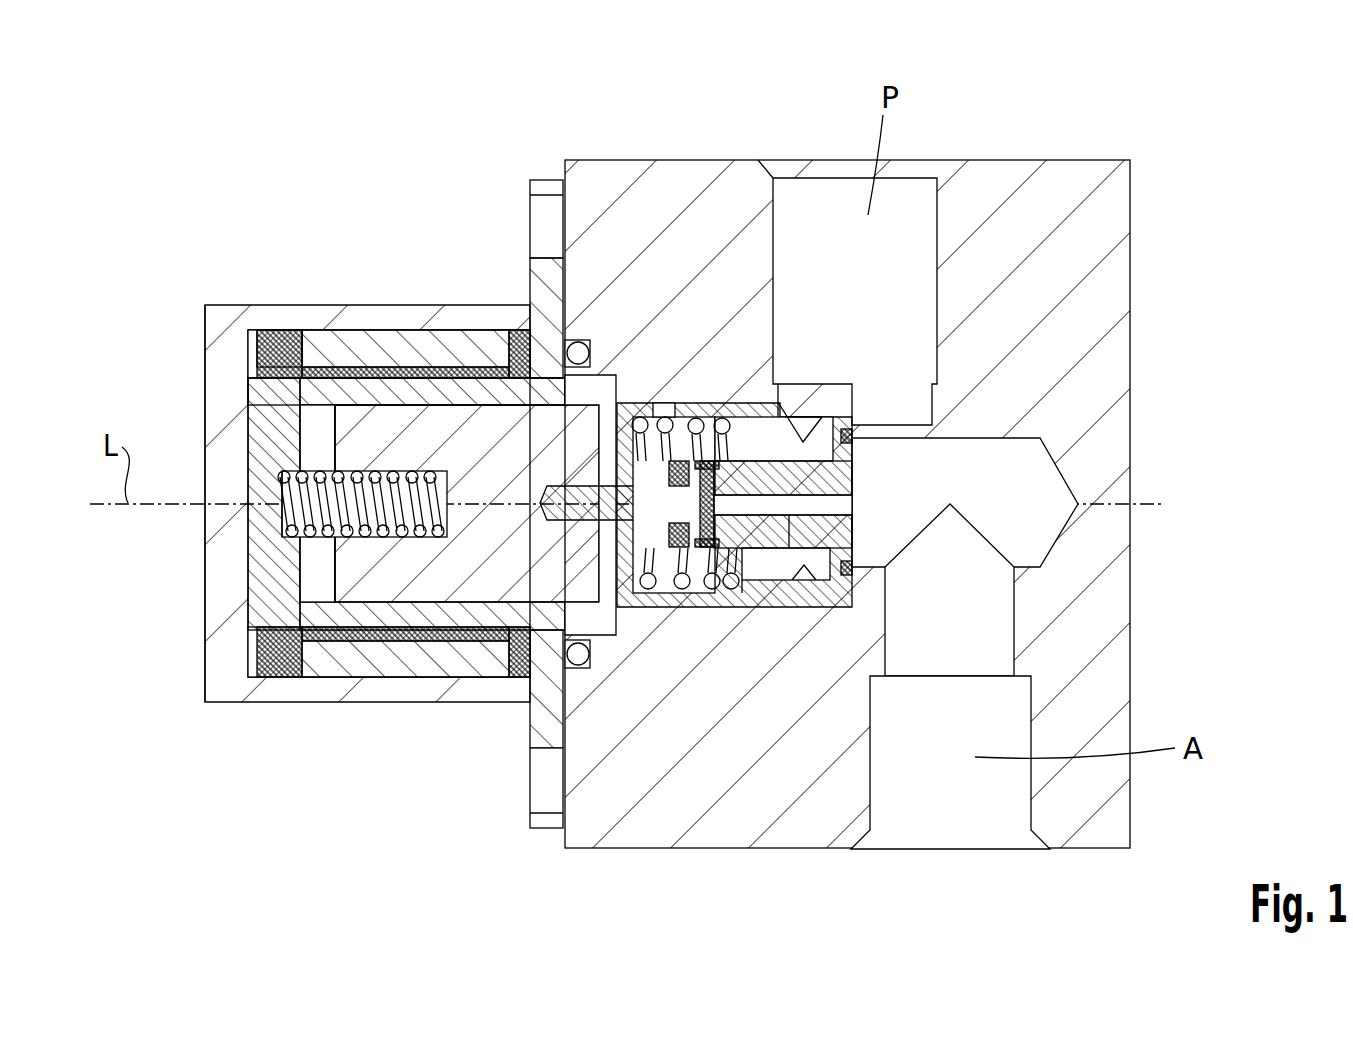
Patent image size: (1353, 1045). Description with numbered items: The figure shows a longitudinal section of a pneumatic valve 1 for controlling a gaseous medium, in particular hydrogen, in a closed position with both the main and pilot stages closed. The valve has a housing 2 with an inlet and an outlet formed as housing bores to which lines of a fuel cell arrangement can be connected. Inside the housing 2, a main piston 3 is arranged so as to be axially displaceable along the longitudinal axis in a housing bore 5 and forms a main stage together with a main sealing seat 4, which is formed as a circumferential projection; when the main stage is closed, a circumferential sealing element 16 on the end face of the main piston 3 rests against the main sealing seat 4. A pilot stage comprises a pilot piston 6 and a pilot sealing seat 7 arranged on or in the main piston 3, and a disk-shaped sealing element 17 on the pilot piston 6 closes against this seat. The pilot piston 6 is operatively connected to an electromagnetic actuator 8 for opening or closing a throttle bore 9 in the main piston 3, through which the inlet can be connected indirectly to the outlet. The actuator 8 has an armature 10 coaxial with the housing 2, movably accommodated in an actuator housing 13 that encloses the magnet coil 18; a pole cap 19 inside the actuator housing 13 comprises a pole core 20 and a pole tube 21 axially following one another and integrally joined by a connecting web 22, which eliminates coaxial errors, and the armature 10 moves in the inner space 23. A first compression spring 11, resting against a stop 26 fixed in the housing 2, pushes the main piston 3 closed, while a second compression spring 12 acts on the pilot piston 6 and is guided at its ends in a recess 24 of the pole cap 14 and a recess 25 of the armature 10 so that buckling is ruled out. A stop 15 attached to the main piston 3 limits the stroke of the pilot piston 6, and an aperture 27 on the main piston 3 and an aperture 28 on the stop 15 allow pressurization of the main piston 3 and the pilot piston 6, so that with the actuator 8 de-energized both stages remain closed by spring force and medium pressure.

The pneumatic valve 1 is at (1120, 126).
The housing 2 is at (1095, 305).
The main piston 3 is at (752, 607).
The main sealing seat 4 is at (858, 585).
The housing bore 5 is at (698, 547).
The pilot piston 6 is at (584, 512).
The pilot sealing seat 7 is at (738, 553).
The actuator 8 is at (389, 299).
The throttle bore 9 is at (790, 530).
The armature 10 is at (415, 567).
The first compression spring 11 is at (695, 418).
The second compression spring 12 is at (317, 471).
The actuator housing 13 is at (217, 497).
The pole cap 14 is at (280, 557).
The stop 15 is at (678, 532).
The circumferential sealing element 16 is at (846, 578).
The disk-shaped sealing element 17 is at (718, 484).
The magnet coil 18 is at (430, 657).
The pole cap 19 is at (426, 365).
The pole core 20 is at (484, 392).
The pole tube 21 is at (268, 335).
The connecting web 22 is at (345, 605).
The inner space 23 is at (317, 582).
The recess 24 is at (282, 482).
The recess 25 is at (367, 471).
The stop 26 is at (627, 403).
The aperture 27 is at (805, 440).
The aperture 28 is at (708, 403).